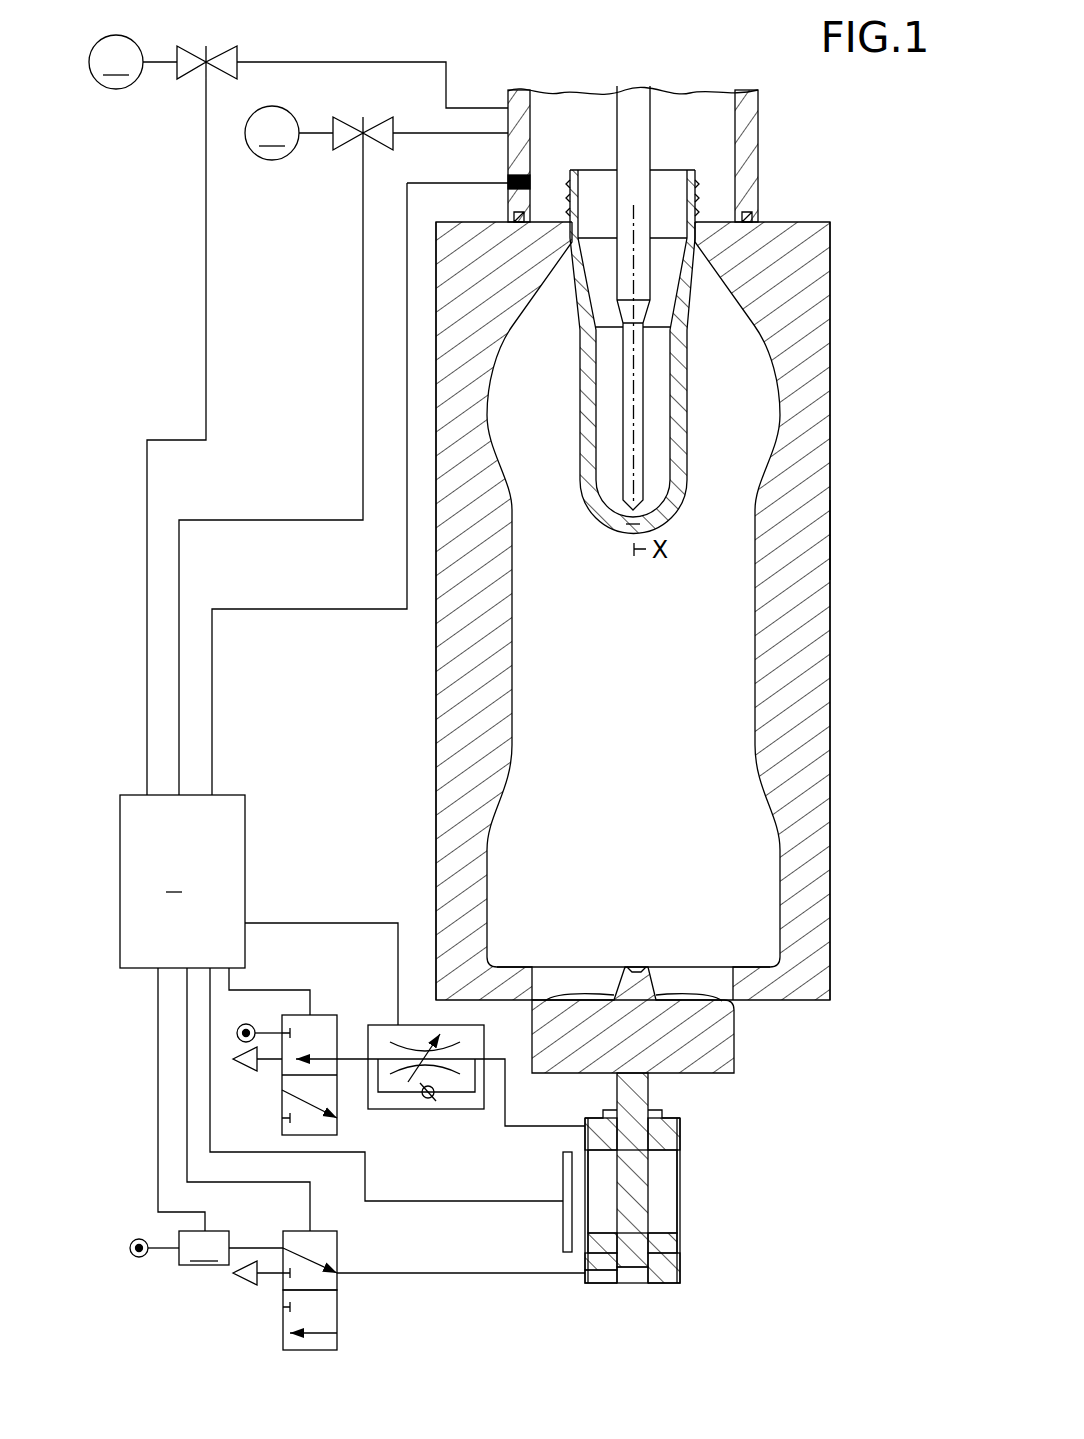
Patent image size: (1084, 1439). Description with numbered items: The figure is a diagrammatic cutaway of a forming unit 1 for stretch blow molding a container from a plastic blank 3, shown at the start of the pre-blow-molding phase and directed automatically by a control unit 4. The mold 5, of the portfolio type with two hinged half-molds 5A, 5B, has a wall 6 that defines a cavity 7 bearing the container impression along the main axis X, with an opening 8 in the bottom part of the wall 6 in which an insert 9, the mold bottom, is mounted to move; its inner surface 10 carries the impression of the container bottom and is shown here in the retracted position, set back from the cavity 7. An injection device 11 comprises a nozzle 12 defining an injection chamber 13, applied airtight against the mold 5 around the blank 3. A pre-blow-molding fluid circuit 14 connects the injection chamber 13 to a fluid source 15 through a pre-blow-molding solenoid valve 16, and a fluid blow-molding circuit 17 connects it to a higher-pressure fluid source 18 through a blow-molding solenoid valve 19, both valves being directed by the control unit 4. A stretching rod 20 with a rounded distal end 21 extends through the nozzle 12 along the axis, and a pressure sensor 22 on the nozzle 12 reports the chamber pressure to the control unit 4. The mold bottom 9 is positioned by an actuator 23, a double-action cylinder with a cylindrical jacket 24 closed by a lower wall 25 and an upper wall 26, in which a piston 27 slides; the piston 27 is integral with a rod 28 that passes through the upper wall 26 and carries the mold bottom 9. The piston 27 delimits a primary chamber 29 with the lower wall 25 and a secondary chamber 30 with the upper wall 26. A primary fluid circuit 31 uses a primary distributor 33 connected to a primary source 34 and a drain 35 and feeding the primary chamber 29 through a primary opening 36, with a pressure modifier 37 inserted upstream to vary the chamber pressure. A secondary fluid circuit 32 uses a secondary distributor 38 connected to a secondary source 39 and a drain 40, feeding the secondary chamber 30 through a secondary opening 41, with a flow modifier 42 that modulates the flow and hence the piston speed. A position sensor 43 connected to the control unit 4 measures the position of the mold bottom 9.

The forming unit 1 is at (855, 150).
The blank 3 is at (688, 405).
The control unit 4 is at (341, 1013).
The mold 5 is at (833, 268).
The half-mold 5A is at (437, 763).
The half-mold 5B is at (831, 708).
The wall 6 is at (822, 536).
The cavity 7 is at (622, 619).
The opening 8 is at (572, 978).
The insert 9 is at (737, 1052).
The inner surface 10 is at (662, 1000).
The injection device 11 is at (369, 38).
The nozzle 12 is at (752, 106).
The injection chamber 13 is at (679, 139).
The pre-blow-molding fluid circuit 14 is at (428, 60).
The fluid source 15 is at (133, 62).
The pre-blow-molding solenoid valve 16 is at (186, 47).
The fluid blow-molding circuit 17 is at (398, 132).
The fluid source 18 is at (289, 133).
The blow-molding solenoid valve 19 is at (350, 142).
The stretching rod 20 is at (617, 130).
The rounded distal end 21 is at (628, 506).
The pressure sensor 22 is at (508, 178).
The actuator 23 is at (644, 1204).
The cylindrical jacket 24 is at (683, 1200).
The lower wall 25 is at (678, 1273).
The upper wall 26 is at (675, 1130).
The piston 27 is at (672, 1247).
The rod 28 is at (640, 1093).
The primary chamber 29 is at (632, 1275).
The secondary chamber 30 is at (662, 1183).
The primary fluid circuit 31 is at (340, 1286).
The secondary fluid circuit 32 is at (484, 1118).
The primary distributor 33 is at (340, 1345).
The primary source 34 is at (130, 1241).
The drain 35 is at (250, 1279).
The primary opening 36 is at (600, 1272).
The pressure modifier 37 is at (231, 1248).
The secondary distributor 38 is at (340, 1125).
The secondary source 39 is at (252, 1022).
The drain 40 is at (254, 1070).
The secondary opening 41 is at (598, 1128).
The flow modifier 42 is at (428, 1111).
The position sensor 43 is at (563, 1240).